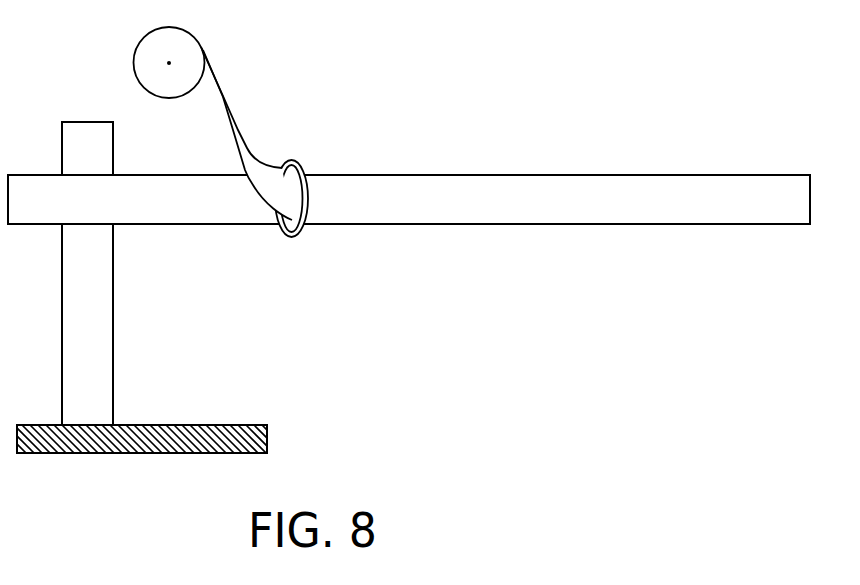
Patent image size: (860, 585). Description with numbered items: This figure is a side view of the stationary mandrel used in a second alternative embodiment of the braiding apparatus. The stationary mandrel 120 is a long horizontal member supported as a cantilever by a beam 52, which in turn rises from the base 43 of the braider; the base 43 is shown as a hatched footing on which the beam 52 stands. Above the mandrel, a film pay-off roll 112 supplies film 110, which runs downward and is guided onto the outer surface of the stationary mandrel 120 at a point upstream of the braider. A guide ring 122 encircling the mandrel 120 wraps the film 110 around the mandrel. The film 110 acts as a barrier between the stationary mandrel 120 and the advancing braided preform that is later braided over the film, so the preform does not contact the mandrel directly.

The base 43 is at (197, 425).
The beam 52 is at (113, 338).
The film 110 is at (243, 133).
The film pay-off roll 112 is at (195, 38).
The stationary mandrel 120 is at (430, 224).
The guide ring 122 is at (298, 167).